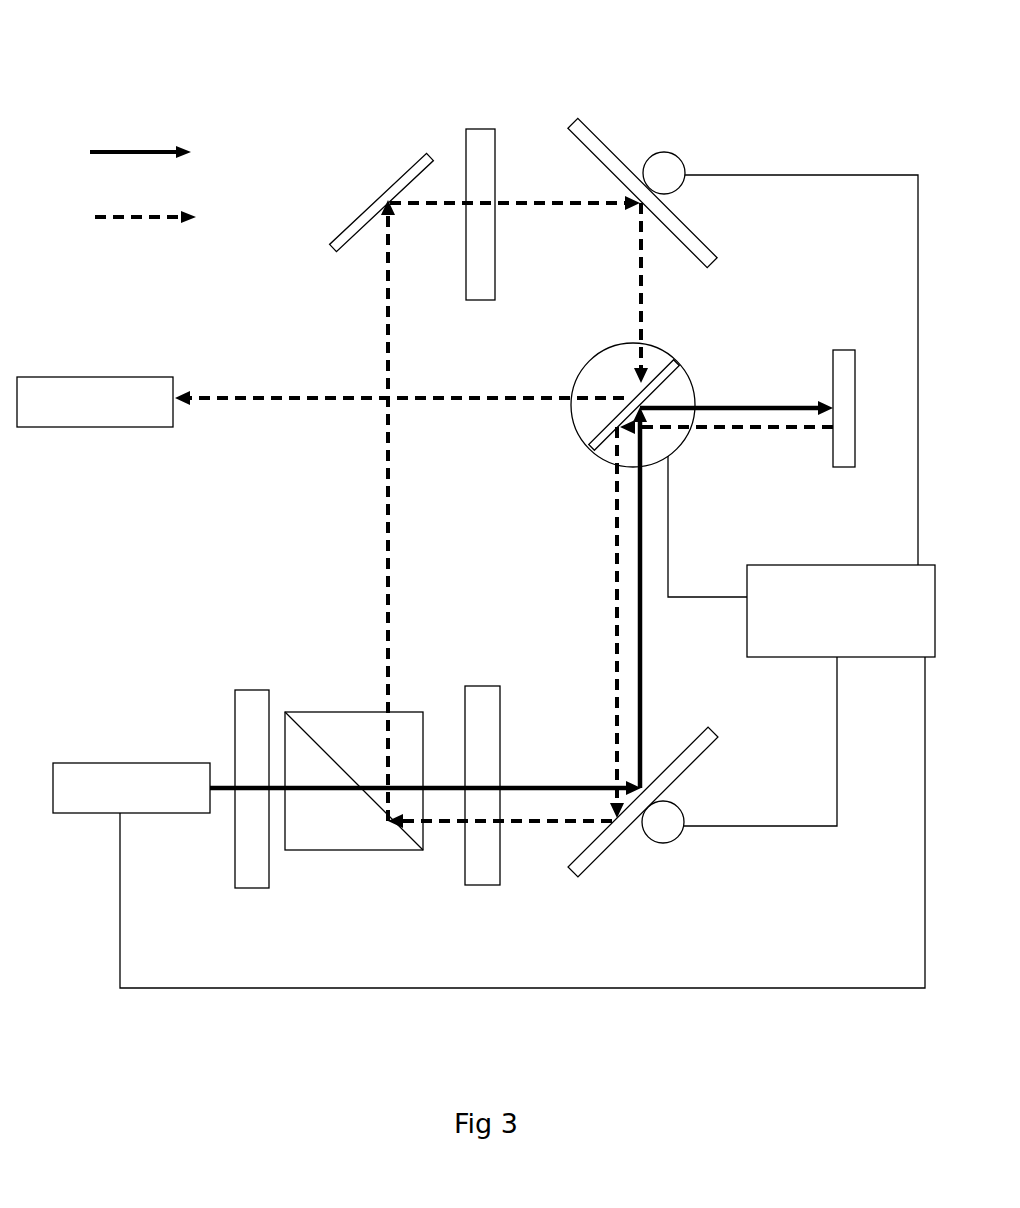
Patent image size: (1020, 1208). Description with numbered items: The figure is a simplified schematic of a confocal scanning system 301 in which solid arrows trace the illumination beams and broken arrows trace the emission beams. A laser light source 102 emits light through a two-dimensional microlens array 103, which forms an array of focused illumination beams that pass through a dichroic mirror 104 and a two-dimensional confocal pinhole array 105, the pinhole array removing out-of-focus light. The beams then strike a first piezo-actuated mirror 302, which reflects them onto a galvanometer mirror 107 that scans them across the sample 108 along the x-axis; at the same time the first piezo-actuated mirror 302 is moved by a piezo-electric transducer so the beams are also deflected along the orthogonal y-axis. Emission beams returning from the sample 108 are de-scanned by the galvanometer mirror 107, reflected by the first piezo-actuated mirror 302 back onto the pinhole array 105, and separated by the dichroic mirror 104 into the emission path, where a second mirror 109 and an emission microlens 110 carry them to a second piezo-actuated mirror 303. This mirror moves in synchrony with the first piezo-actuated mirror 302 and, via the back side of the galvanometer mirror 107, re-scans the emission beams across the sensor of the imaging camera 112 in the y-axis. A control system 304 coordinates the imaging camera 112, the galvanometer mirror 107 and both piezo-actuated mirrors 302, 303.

The laser light source 102 is at (131, 727).
The two-dimensional microlens array 103 is at (247, 754).
The dichroic mirror 104 is at (354, 731).
The two-dimensional confocal pinhole array 105 is at (478, 750).
The galvanometer mirror 107 is at (641, 433).
The sample 108 is at (816, 392).
The second mirror 109 is at (374, 169).
The emission microlens 110 is at (481, 249).
The imaging camera 112 is at (95, 352).
The confocal scanning system 301 is at (151, 126).
The first piezo-actuated mirror 302 is at (677, 831).
The second piezo-actuated mirror 303 is at (655, 158).
The control system 304 is at (795, 633).